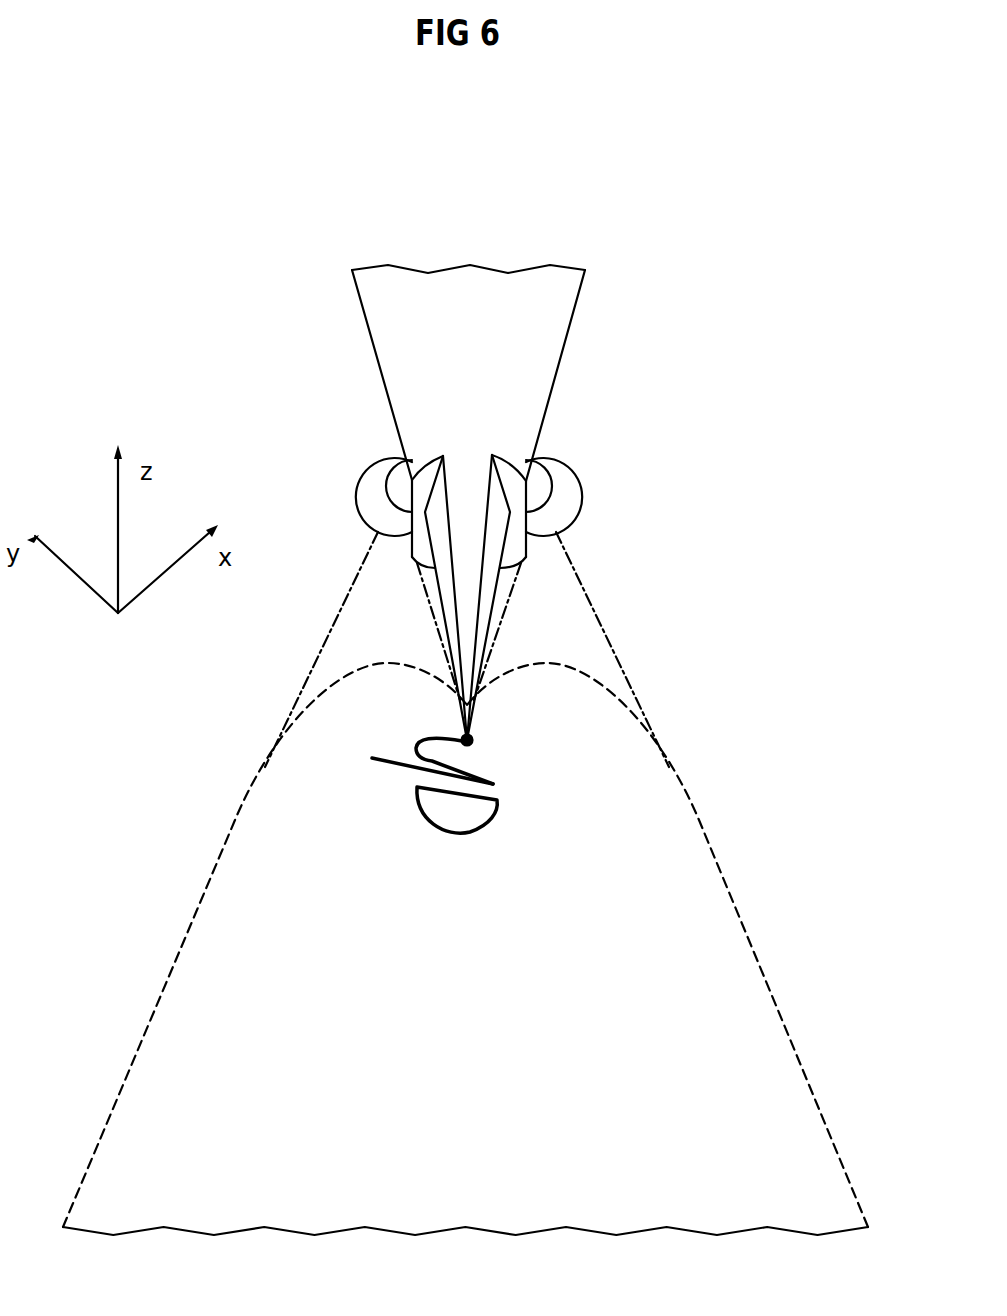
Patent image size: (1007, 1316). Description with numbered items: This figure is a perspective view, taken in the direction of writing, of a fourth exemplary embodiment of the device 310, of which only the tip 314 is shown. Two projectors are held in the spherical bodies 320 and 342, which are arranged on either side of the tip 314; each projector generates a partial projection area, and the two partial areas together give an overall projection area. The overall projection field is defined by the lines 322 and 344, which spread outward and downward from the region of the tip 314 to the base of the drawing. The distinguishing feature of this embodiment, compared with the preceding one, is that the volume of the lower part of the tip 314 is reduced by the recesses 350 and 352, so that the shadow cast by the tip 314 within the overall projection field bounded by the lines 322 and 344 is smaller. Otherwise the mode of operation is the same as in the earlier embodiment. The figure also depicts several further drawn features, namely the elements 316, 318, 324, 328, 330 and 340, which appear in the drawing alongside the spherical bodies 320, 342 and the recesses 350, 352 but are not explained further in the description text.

The device 310 is at (500, 207).
The tip 314 is at (567, 330).
The focal point 316 is at (475, 743).
The lens 318 is at (538, 457).
The spherical body 320 is at (577, 497).
The line 322 is at (705, 830).
The prism 324 is at (521, 562).
The coil 328 is at (457, 835).
The wire 330 is at (380, 762).
The lens 340 is at (393, 461).
The spherical body 342 is at (360, 497).
The line 344 is at (229, 830).
The recess 350 is at (450, 602).
The recess 352 is at (492, 487).